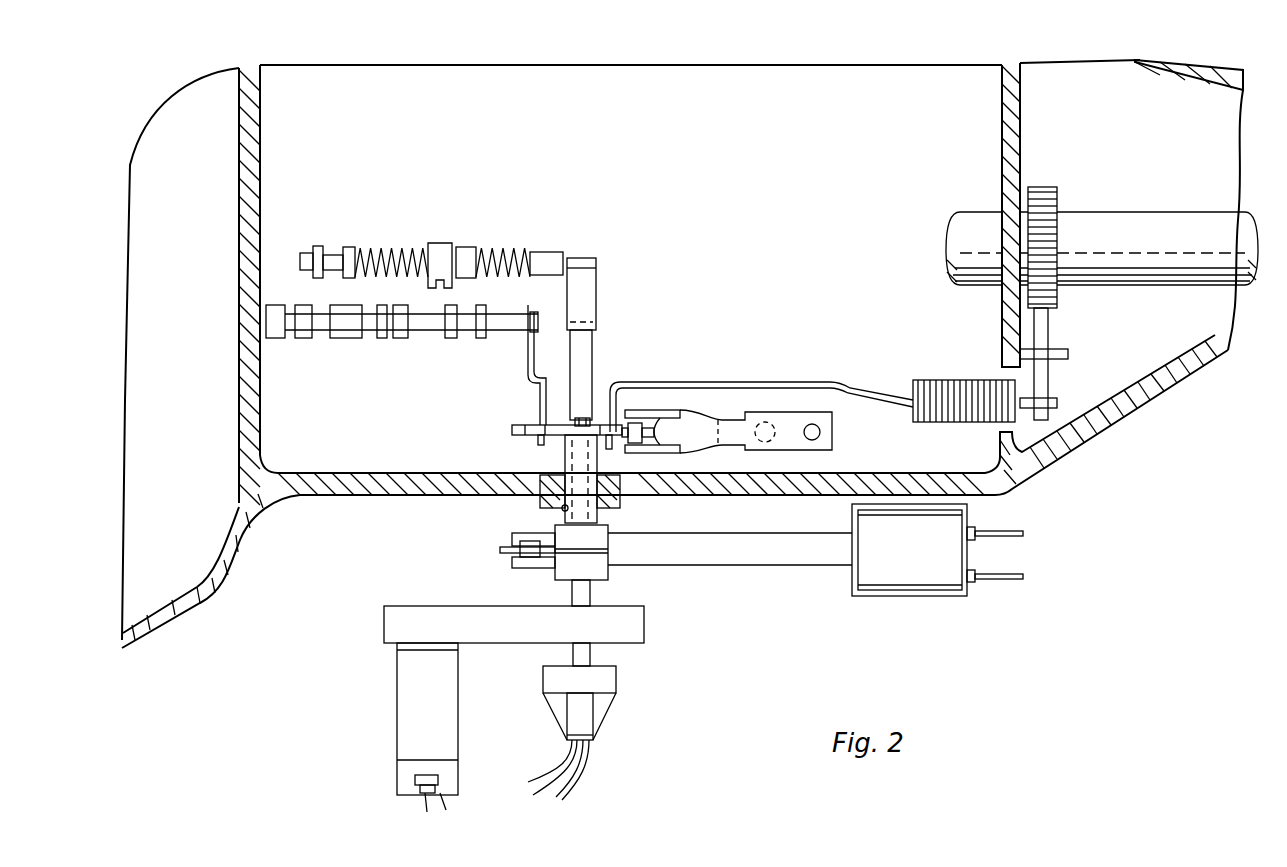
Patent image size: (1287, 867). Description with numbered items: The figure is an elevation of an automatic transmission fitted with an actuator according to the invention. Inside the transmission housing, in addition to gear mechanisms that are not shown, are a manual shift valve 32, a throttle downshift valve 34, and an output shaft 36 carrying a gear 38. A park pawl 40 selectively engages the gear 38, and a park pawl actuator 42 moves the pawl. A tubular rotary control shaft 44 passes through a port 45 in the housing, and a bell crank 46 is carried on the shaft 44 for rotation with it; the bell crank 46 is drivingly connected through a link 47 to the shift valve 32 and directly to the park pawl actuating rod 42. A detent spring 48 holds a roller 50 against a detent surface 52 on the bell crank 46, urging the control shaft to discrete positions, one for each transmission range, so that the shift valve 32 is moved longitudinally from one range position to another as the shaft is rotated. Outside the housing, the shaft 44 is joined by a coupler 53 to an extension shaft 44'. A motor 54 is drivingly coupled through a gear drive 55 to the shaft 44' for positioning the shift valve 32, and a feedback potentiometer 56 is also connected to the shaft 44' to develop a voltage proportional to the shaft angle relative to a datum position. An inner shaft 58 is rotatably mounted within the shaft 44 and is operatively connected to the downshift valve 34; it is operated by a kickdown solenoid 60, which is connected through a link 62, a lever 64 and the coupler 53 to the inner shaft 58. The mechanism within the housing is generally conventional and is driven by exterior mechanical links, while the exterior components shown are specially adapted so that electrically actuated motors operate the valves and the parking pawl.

The manual shift valve 32 is at (428, 330).
The throttle downshift valve 34 is at (517, 248).
The output shaft 36 is at (1170, 220).
The gear 38 is at (1050, 190).
The park pawl 40 is at (1042, 327).
The park pawl actuator 42 is at (838, 381).
The tubular rotary control shaft 44 is at (540, 426).
The extension shaft 44' is at (634, 661).
The port 45 is at (562, 508).
The bell crank 46 is at (525, 428).
The link 47 is at (528, 378).
The detent spring 48 is at (700, 425).
The roller 50 is at (648, 443).
The detent surface 52 is at (616, 437).
The coupler 53 is at (602, 572).
The motor 54 is at (405, 683).
The gear drive 55 is at (450, 613).
The feedback potentiometer 56 is at (608, 688).
The inner shaft 58 is at (584, 420).
The kickdown solenoid 60 is at (898, 594).
The link 62 is at (775, 553).
The lever 64 is at (500, 548).